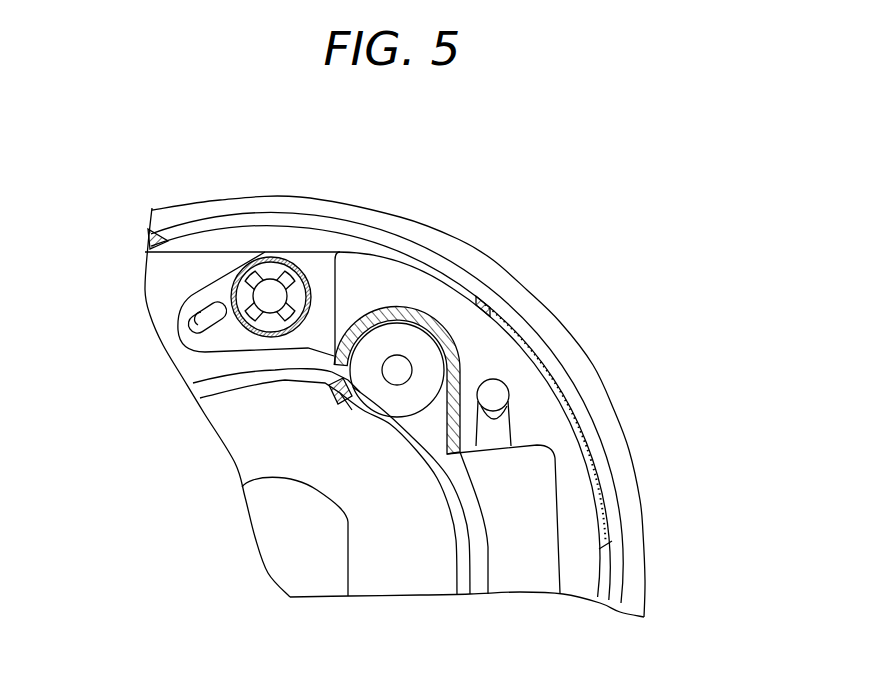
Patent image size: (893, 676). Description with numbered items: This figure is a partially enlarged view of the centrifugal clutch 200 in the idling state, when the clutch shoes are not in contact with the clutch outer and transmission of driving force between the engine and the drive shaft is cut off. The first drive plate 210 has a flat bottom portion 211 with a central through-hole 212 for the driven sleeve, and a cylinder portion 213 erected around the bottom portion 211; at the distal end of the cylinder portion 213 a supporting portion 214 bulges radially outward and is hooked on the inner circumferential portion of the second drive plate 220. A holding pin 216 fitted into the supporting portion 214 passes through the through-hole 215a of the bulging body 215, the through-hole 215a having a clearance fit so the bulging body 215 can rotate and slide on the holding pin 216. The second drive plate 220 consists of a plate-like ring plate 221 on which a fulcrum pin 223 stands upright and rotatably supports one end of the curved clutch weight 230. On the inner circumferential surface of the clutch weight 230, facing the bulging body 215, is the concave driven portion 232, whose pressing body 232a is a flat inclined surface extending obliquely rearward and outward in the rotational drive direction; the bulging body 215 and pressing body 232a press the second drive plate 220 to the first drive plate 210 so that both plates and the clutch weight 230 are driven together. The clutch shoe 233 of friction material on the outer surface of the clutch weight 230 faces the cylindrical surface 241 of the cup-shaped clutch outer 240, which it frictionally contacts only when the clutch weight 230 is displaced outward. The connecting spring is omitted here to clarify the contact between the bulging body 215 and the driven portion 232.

The centrifugal clutch 200 is at (135, 129).
The first drive plate 210 is at (204, 373).
The bottom portion 211 is at (250, 460).
The through-hole 212 is at (260, 487).
The cylinder portion 213 is at (233, 391).
The supporting portion 214 is at (383, 420).
The bulging body 215 is at (335, 385).
The through-hole 215a is at (400, 372).
The holding pin 216 is at (410, 337).
The second drive plate 220 is at (160, 240).
The ring plate 221 is at (170, 289).
The fulcrum pin 223 is at (318, 292).
The clutch weight 230 is at (293, 256).
The driven portion 232 is at (405, 300).
The pressing body 232a is at (420, 465).
The clutch shoe 233 is at (478, 298).
The clutch outer 240 is at (647, 610).
The cylindrical surface 241 is at (622, 577).